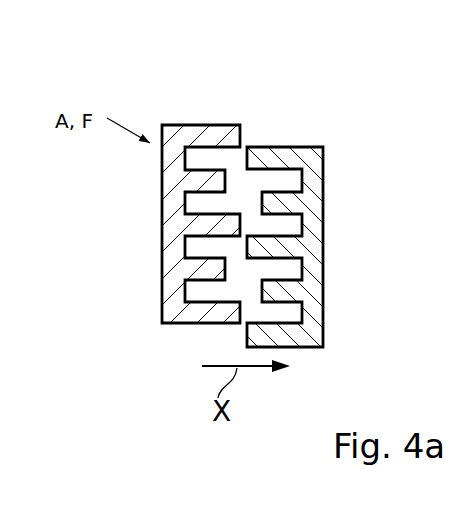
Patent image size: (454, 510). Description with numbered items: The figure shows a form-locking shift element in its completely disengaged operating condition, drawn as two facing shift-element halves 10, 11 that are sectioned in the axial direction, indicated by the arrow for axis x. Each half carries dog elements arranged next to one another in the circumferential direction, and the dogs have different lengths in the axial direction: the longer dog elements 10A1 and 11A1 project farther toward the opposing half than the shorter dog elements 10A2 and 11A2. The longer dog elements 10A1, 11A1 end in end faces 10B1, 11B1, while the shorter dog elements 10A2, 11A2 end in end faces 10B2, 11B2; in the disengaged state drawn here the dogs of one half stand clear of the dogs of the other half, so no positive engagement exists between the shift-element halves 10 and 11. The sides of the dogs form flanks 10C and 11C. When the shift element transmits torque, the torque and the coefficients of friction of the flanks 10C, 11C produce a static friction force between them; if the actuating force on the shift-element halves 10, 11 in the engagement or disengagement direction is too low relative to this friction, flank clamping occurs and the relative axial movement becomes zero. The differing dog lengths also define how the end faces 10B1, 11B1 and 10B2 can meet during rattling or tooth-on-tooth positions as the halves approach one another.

The shift-element half 10 is at (175, 122).
The dog element 10A1 is at (190, 316).
The dog element 10A2 is at (198, 180).
The end face of the dog element 10B1 is at (240, 222).
The end face of the dog element 10B2 is at (225, 270).
The flank of the dog element 10C is at (223, 301).
The shift-element half 11 is at (312, 143).
The dog element 11A1 is at (255, 153).
The dog element 11A2 is at (282, 202).
The end face of the dog element 11B1 is at (247, 248).
The end face of the dog element 11B2 is at (262, 204).
The flank of the dog element 11C is at (275, 318).